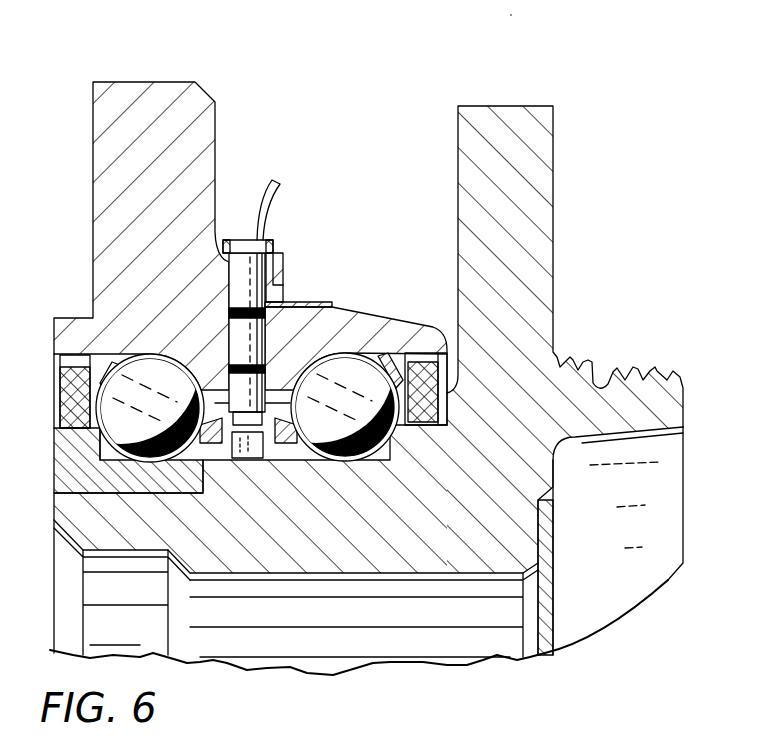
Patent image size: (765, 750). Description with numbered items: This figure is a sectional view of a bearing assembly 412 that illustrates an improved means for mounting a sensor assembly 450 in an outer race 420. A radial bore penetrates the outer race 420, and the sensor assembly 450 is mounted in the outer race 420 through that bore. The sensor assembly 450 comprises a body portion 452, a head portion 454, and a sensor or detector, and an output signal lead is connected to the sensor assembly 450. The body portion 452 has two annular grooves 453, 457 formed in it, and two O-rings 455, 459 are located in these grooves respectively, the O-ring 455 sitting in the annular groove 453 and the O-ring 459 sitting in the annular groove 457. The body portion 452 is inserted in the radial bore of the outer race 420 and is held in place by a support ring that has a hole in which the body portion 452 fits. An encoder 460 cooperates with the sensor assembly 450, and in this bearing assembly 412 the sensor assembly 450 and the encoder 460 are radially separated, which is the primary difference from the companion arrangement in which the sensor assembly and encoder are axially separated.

The bearing assembly 412 is at (328, 55).
The outer race 420 is at (150, 97).
The sensor assembly 450 is at (288, 192).
The body portion 452 is at (283, 267).
The annular groove 453 is at (244, 305).
The head portion 454 is at (268, 245).
The O-ring 455 is at (283, 302).
The annular groove 457 is at (252, 368).
The O-ring 459 is at (232, 363).
The encoder 460 is at (254, 455).